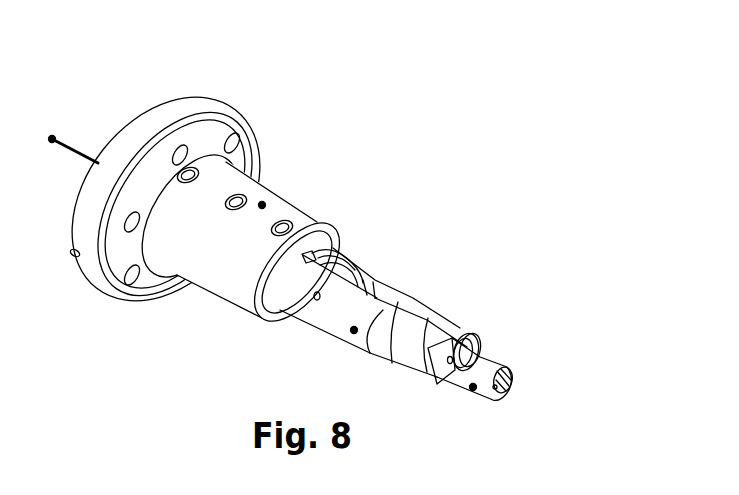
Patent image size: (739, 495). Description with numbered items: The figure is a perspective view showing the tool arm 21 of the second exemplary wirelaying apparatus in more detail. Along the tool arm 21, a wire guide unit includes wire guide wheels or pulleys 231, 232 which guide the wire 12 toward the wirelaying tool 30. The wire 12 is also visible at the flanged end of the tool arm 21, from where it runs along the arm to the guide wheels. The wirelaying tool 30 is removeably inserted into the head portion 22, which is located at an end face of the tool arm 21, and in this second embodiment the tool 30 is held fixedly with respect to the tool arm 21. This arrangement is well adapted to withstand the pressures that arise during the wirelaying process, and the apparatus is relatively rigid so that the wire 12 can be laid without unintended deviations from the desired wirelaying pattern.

The wire 12 is at (52, 140).
The tool arm 21 is at (262, 205).
The head portion 22 is at (473, 387).
The wire guide wheel 231 is at (359, 250).
The wire guide wheel 232 is at (481, 324).
The wirelaying tool 30 is at (524, 372).